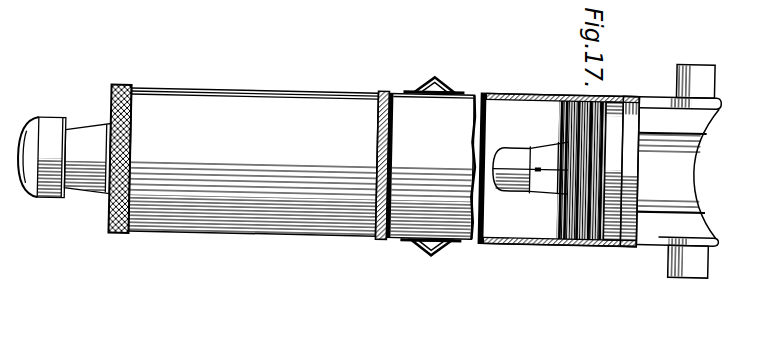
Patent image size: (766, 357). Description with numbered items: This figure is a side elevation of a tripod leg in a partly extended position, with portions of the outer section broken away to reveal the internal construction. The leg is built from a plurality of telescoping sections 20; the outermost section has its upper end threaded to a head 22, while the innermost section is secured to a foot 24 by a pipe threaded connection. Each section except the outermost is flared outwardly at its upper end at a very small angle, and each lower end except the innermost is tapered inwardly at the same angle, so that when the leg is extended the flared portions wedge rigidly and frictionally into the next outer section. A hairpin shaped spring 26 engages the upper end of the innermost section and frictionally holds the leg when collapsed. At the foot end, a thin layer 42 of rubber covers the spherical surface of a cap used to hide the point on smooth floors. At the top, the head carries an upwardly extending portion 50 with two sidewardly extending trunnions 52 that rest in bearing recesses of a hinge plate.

The telescoping section 20 is at (282, 220).
The head 22 is at (635, 236).
The foot 24 is at (82, 190).
The hairpin shaped spring 26 is at (533, 186).
The thin layer of rubber 42 is at (45, 199).
The upwardly extending portion 50 is at (708, 213).
The trunnion 52 is at (686, 53).